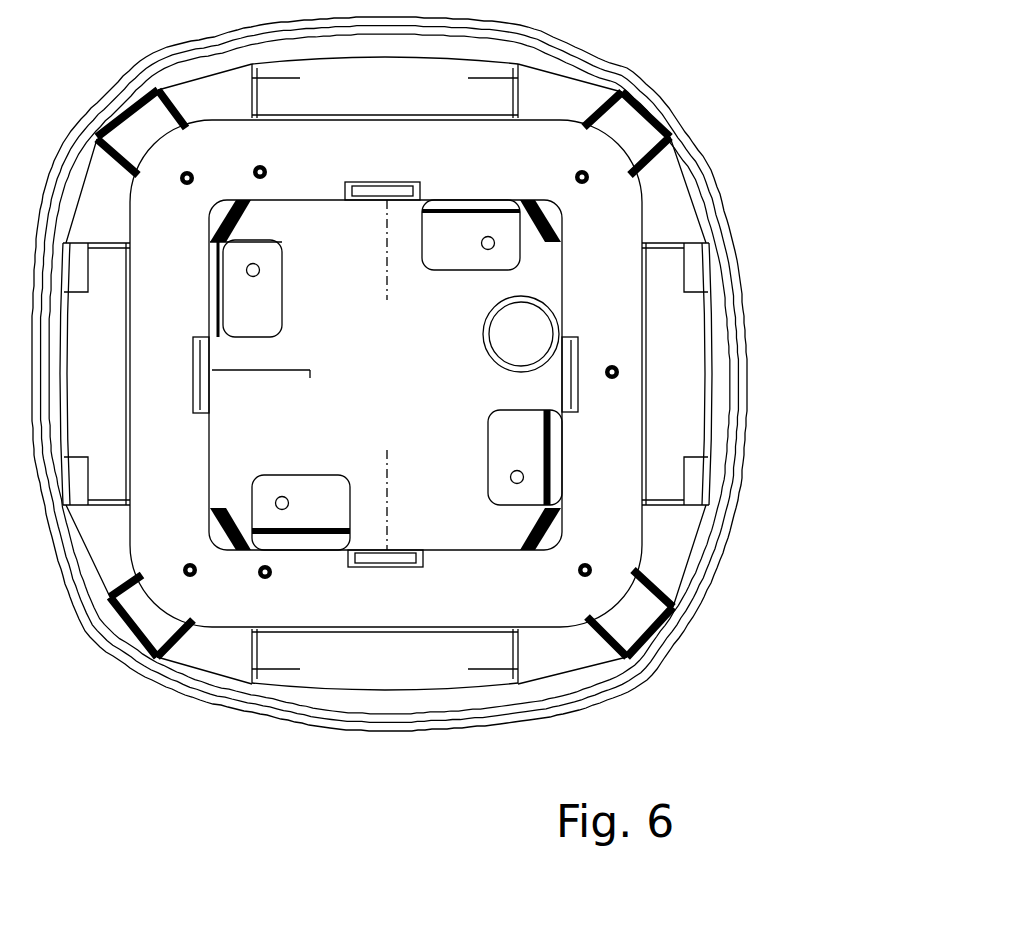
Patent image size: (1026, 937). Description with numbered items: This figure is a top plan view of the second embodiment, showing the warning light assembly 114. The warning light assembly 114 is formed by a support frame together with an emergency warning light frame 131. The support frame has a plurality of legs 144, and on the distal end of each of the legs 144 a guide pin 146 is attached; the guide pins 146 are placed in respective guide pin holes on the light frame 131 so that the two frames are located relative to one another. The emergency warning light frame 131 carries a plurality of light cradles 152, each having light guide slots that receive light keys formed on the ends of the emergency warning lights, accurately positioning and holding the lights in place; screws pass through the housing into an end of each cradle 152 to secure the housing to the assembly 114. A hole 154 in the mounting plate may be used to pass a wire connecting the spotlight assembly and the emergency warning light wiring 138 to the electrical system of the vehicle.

The warning light assembly 114 is at (450, 374).
The emergency warning light frame 131 is at (386, 373).
The emergency warning light wiring 138 is at (388, 281).
The legs 144 is at (269, 298).
The guide pin 146 is at (259, 265).
The light cradles 152 is at (738, 503).
The hole 154 is at (544, 346).